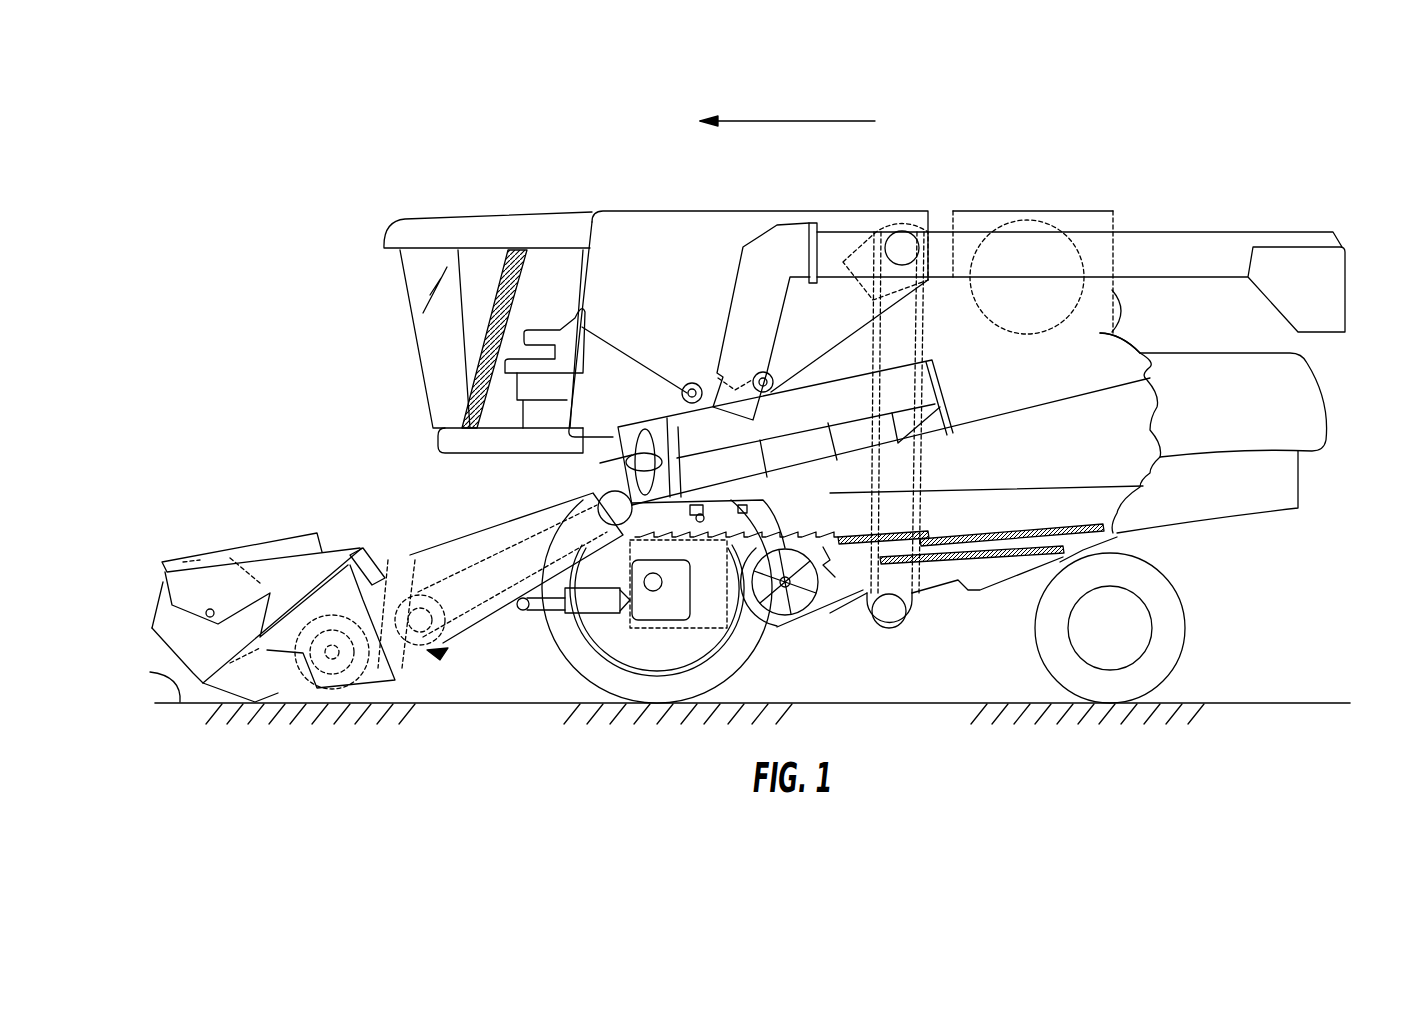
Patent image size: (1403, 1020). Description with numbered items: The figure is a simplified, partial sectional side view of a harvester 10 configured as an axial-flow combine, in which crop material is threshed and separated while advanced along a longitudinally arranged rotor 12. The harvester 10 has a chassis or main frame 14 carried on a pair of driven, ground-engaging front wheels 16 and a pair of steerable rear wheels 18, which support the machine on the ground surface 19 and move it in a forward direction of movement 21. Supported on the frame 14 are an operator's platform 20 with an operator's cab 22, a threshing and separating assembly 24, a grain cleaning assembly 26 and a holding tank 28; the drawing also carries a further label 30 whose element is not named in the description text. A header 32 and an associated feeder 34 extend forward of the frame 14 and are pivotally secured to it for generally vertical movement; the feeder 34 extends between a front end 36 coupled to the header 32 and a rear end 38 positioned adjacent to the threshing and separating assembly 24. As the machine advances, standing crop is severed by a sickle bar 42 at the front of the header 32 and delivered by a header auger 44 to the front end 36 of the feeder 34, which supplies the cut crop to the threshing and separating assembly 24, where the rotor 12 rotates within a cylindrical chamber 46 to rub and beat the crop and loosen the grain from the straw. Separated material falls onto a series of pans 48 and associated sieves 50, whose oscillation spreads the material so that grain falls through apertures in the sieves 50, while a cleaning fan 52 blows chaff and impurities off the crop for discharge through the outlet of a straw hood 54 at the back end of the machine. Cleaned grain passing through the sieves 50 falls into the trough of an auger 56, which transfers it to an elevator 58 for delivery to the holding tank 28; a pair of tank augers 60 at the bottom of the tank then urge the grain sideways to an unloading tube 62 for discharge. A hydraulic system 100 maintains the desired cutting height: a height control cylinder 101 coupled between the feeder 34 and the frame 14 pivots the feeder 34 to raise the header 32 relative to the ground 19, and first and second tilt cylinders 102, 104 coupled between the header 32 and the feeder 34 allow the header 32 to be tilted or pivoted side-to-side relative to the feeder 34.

The harvester 10 is at (443, 168).
The rotor 12 is at (650, 430).
The chassis or main frame 14 is at (1117, 537).
The front wheels 16 is at (590, 668).
The rear wheels 18 is at (1180, 640).
The ground surface 19 is at (158, 655).
The operator's platform 20 is at (452, 442).
The forward direction of movement 21 is at (808, 120).
The operator's cab 22 is at (432, 330).
The threshing and separating assembly 24 is at (783, 423).
The grain cleaning assembly 26 is at (855, 632).
The holding tank 28 is at (683, 210).
The grain tank 30 is at (1025, 222).
The header 32 is at (202, 538).
The feeder 34 is at (420, 527).
The front end of the feeder 36 is at (330, 593).
The rear end of the feeder 38 is at (595, 470).
The sickle bar 42 is at (218, 688).
The header auger 44 is at (353, 673).
The cylindrical chamber 46 is at (830, 390).
The pans 48 is at (800, 537).
The sieves 50 is at (927, 527).
The cleaning fan 52 is at (775, 620).
The straw hood 54 is at (1317, 417).
The auger 56 is at (892, 620).
The elevator 58 is at (920, 317).
The tank augers 60 is at (692, 382).
The unloading tube 62 is at (1175, 248).
The hydraulic system 100 is at (446, 654).
The height control cylinder 101 is at (543, 618).
The first tilt cylinder 102 is at (433, 670).
The second tilt cylinder 104 is at (420, 620).